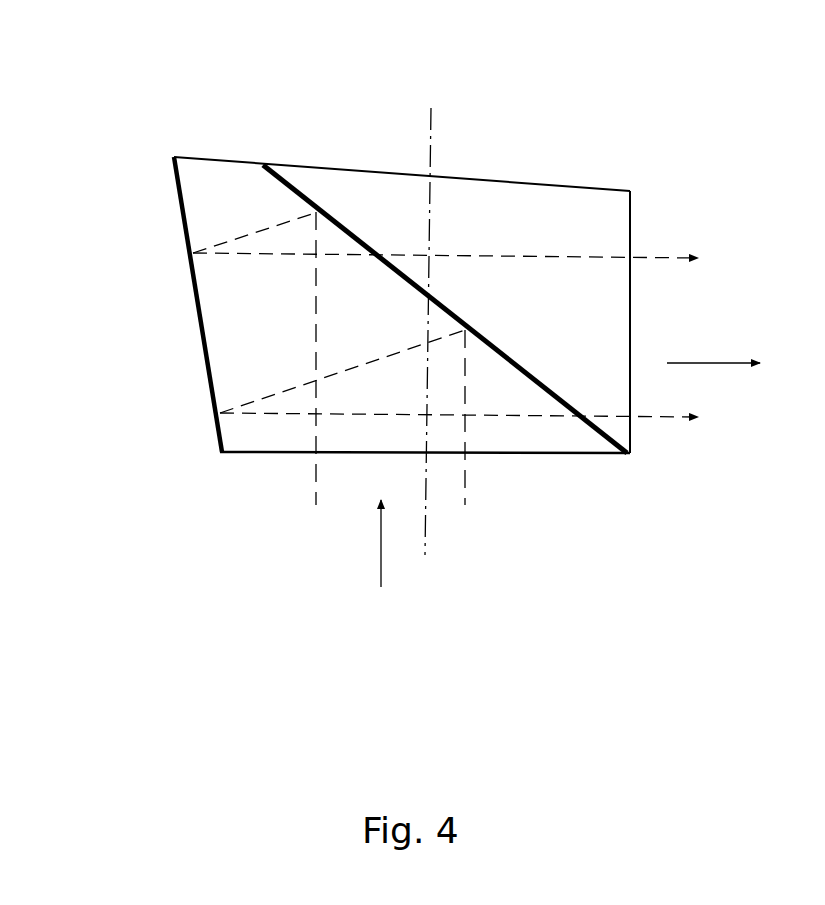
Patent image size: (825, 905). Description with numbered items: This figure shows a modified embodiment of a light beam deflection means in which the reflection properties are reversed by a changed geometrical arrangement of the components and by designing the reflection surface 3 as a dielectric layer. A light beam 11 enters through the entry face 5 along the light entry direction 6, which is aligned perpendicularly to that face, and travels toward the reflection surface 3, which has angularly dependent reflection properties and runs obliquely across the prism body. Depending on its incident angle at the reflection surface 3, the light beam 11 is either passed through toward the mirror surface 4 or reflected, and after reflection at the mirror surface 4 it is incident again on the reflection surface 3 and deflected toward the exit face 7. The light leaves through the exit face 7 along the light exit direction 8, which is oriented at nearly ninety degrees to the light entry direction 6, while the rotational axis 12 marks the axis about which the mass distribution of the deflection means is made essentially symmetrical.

The reflection layer 3 is at (470, 338).
The mirror surface 4 is at (197, 310).
The entry face 5 is at (262, 437).
The light entry direction 6 is at (381, 548).
The exit face 7 is at (633, 201).
The light exit direction 8 is at (713, 363).
The light beam 11 is at (313, 500).
The rotational axis 12 is at (431, 135).